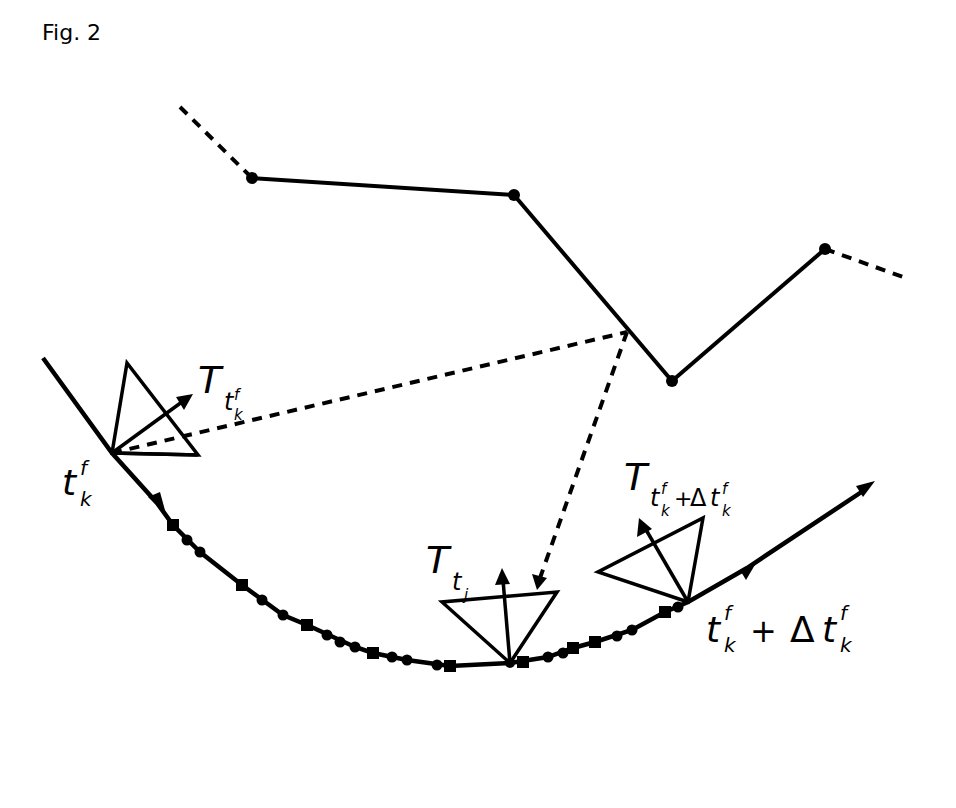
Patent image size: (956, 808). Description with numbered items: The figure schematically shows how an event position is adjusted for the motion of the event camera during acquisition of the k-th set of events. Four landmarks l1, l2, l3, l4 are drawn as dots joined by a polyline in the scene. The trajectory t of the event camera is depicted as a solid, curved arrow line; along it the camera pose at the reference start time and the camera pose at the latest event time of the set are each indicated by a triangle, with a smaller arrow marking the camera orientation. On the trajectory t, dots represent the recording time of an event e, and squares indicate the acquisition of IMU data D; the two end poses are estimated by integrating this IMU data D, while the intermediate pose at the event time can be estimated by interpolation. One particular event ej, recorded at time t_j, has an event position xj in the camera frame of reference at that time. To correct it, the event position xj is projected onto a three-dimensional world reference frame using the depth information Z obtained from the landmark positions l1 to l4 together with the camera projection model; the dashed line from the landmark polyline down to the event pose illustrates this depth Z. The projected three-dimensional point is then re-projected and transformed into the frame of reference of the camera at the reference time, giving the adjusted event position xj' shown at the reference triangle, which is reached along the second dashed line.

The landmark l1 is at (232, 145).
The landmark l2 is at (528, 168).
The landmark l3 is at (697, 383).
The landmark l4 is at (861, 240).
The trajectory of the event camera t is at (470, 512).
The depth information Z is at (546, 461).
The IMU data D is at (307, 625).
The event e is at (262, 600).
The j-th event ej is at (510, 663).
The event position xj is at (547, 611).
The adjusted event position xj' is at (181, 456).